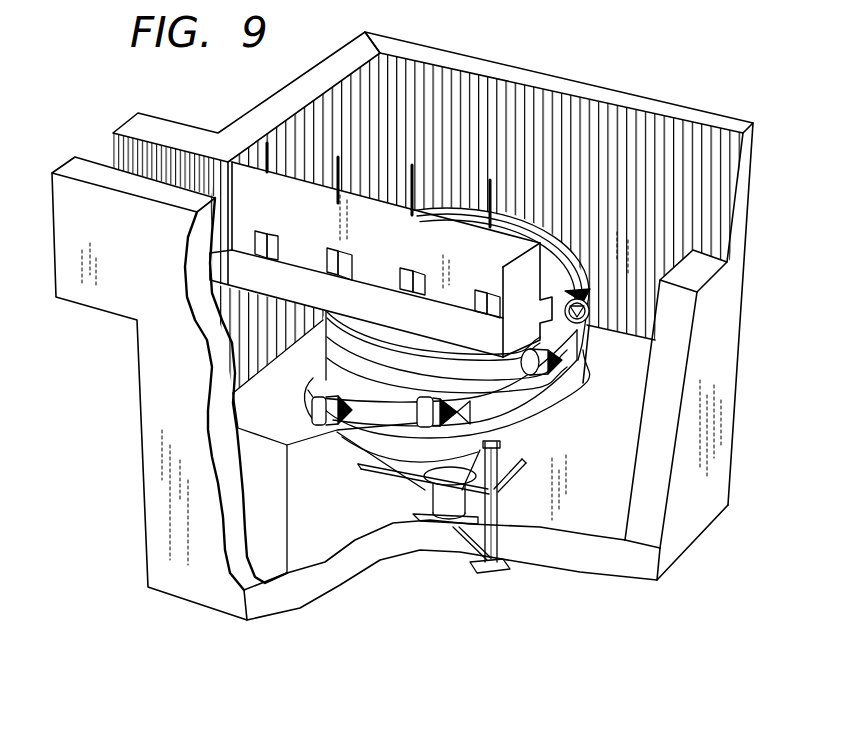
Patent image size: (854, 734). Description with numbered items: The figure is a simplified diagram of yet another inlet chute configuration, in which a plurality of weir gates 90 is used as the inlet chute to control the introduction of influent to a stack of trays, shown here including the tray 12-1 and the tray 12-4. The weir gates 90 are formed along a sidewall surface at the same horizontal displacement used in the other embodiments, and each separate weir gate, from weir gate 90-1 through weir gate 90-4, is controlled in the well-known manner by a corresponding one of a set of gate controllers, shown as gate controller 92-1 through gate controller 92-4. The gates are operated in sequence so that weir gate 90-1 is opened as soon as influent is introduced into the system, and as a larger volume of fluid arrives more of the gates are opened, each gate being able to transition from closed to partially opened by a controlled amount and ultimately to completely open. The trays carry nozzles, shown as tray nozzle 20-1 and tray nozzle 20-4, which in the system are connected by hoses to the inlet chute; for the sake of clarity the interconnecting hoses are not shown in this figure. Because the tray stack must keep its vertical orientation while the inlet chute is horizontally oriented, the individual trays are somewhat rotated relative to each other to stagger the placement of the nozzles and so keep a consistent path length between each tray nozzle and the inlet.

The tray 12-4 is at (566, 253).
The weir gates 90 is at (381, 259).
The weir gate 90-1 is at (267, 229).
The weir gate 90-4 is at (482, 287).
The gate controller 92-1 is at (268, 157).
The gate controller 92-4 is at (492, 190).
The tray nozzle 20-1 is at (312, 407).
The tray nozzle 20-4 is at (588, 293).
The tray 12-1 is at (368, 428).